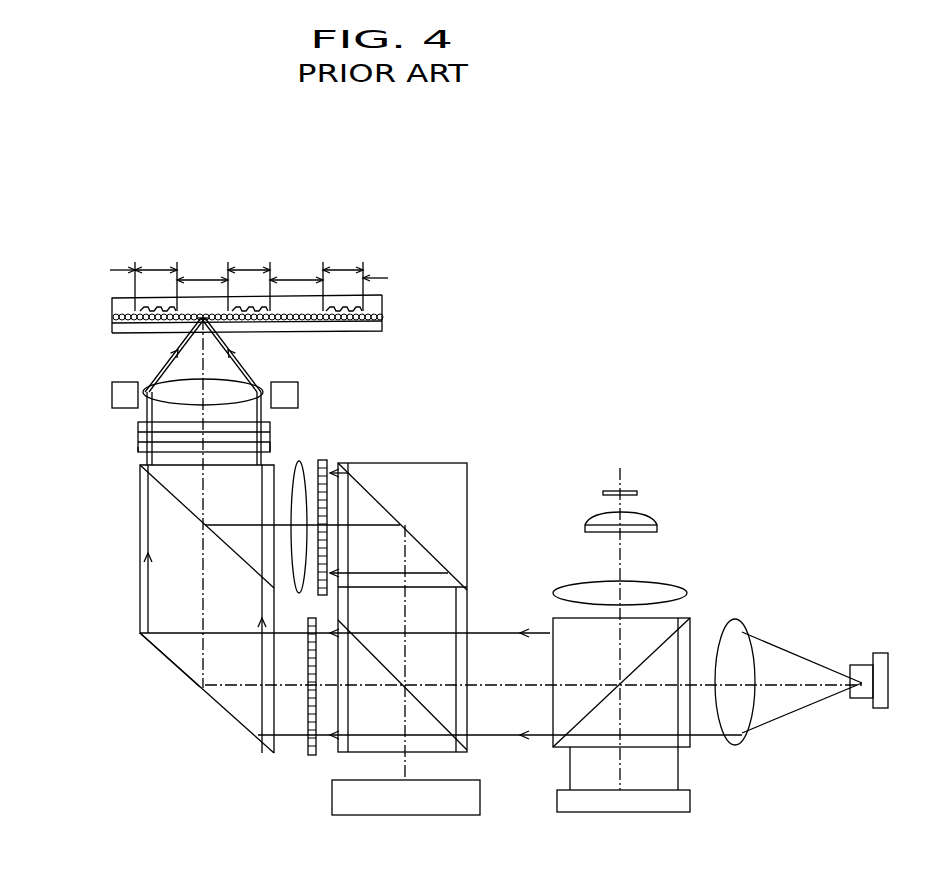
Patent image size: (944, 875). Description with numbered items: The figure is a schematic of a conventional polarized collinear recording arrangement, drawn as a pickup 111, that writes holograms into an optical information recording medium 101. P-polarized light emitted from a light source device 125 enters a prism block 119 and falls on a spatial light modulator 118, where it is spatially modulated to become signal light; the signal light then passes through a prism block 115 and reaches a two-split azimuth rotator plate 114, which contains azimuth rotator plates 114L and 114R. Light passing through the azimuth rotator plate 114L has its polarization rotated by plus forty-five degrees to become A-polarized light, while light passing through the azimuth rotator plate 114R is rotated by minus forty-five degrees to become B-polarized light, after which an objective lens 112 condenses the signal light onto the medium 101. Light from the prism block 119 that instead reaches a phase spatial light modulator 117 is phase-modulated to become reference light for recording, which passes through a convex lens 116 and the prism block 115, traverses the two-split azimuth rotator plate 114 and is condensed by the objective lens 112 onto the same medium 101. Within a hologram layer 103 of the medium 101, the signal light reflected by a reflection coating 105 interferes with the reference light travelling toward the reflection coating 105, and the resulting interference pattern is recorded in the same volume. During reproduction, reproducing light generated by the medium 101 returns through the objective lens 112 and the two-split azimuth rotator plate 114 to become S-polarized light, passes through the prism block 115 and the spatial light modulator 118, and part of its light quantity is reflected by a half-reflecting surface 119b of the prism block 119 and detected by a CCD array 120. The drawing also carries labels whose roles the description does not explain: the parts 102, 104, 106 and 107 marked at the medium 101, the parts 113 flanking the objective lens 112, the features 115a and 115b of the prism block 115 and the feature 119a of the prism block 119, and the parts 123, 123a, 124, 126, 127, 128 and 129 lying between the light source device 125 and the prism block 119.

The optical information recording medium 101 is at (430, 250).
The substrate 102 is at (112, 333).
The hologram layer 103 is at (112, 317).
The protective layer 104 is at (112, 300).
The reflection coating 105 is at (177, 323).
The land 106 is at (153, 268).
The groove 107 is at (200, 278).
The pickup 111 is at (138, 677).
The objective lens 112 is at (256, 385).
The lens actuator 113 is at (112, 393).
The two-split azimuth rotator plate 114 is at (88, 420).
The azimuth rotator plate 114L is at (137, 447).
The azimuth rotator plate 114R is at (273, 445).
The prism block 115 is at (112, 552).
The upper polarizing splitting surface 115a is at (172, 485).
The lower reflecting surface 115b is at (150, 645).
The convex lens 116 is at (300, 462).
The phase spatial light modulator 117 is at (328, 492).
The spatial light modulator 118 is at (308, 750).
The prism block 119 is at (440, 550).
The upper splitting surface 119a is at (392, 508).
The half-reflecting surface 119b is at (440, 730).
The CCD array 120 is at (330, 793).
The polarizing beam splitter 123 is at (546, 752).
The polarizing splitting surface 123a is at (670, 617).
The collimator lens 124 is at (737, 623).
The light source device 125 is at (863, 665).
The photodetector 126 is at (690, 798).
The lens 127 is at (660, 578).
The lens 128 is at (647, 517).
The photodetector 129 is at (637, 493).